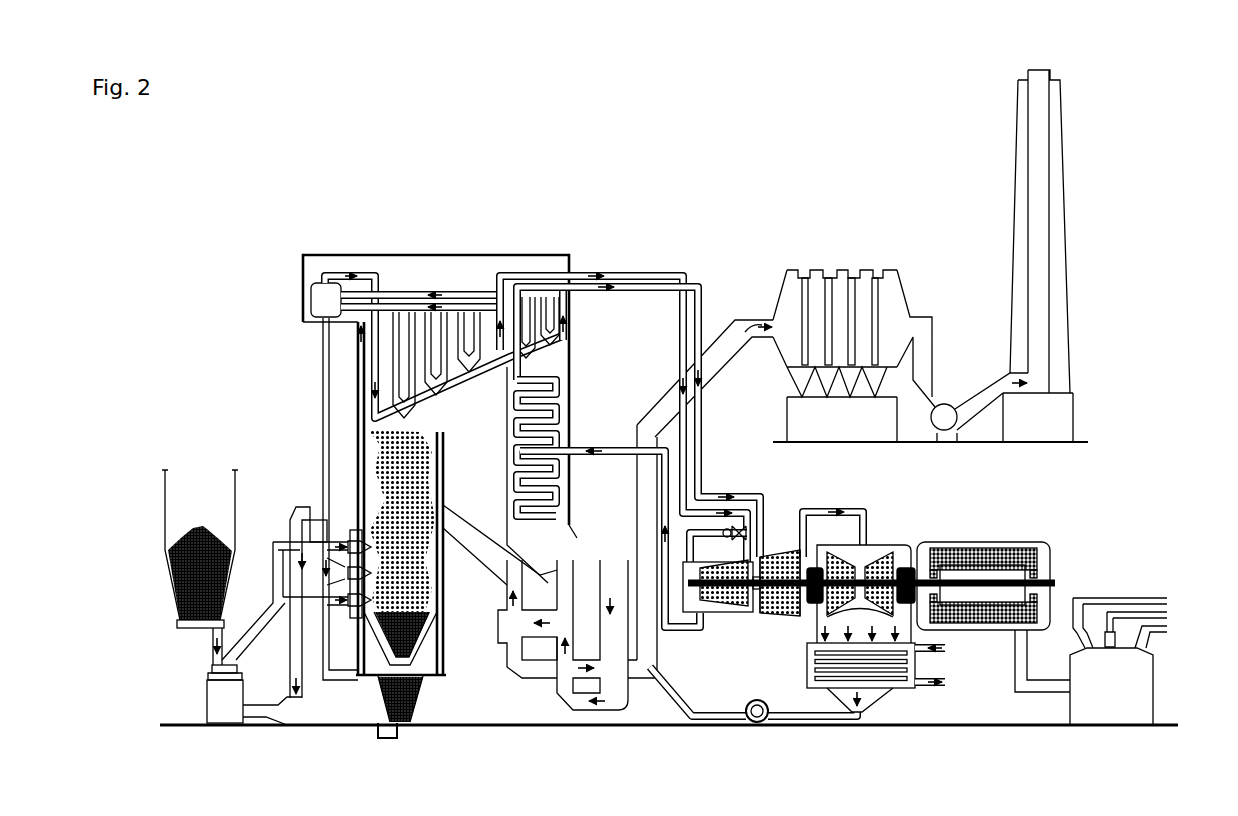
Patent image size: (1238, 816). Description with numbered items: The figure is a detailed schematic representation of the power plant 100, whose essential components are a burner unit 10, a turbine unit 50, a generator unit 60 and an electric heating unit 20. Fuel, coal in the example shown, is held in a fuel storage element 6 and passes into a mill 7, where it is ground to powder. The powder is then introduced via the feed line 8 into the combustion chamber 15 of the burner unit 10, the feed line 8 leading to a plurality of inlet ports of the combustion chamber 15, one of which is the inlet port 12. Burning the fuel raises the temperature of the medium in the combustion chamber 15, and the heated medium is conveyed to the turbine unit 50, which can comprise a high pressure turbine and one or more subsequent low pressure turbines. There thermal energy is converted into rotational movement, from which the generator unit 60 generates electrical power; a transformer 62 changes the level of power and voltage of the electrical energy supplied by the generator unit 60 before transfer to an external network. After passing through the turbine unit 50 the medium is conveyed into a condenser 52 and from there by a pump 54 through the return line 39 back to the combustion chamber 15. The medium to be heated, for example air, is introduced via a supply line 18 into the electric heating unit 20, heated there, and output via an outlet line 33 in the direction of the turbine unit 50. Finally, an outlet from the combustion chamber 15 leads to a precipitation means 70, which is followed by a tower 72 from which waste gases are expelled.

The fuel storage element 6 is at (200, 511).
The mill 7 is at (225, 715).
The feed line 8 is at (272, 542).
The burner unit 10 is at (416, 254).
The inlet port 12 is at (332, 547).
The combustion chamber 15 is at (492, 268).
The supply line 18 is at (608, 598).
The electric heating unit 20 is at (497, 630).
The outlet line 33 is at (458, 505).
The return line 39 is at (673, 700).
The turbine unit 50 is at (887, 534).
The condenser 52 is at (895, 698).
The pump 54 is at (760, 724).
The generator unit 60 is at (1052, 548).
The transformer 62 is at (1120, 693).
The precipitation means 70 is at (912, 334).
The tower 72 is at (1050, 423).
The power plant 100 is at (1150, 147).